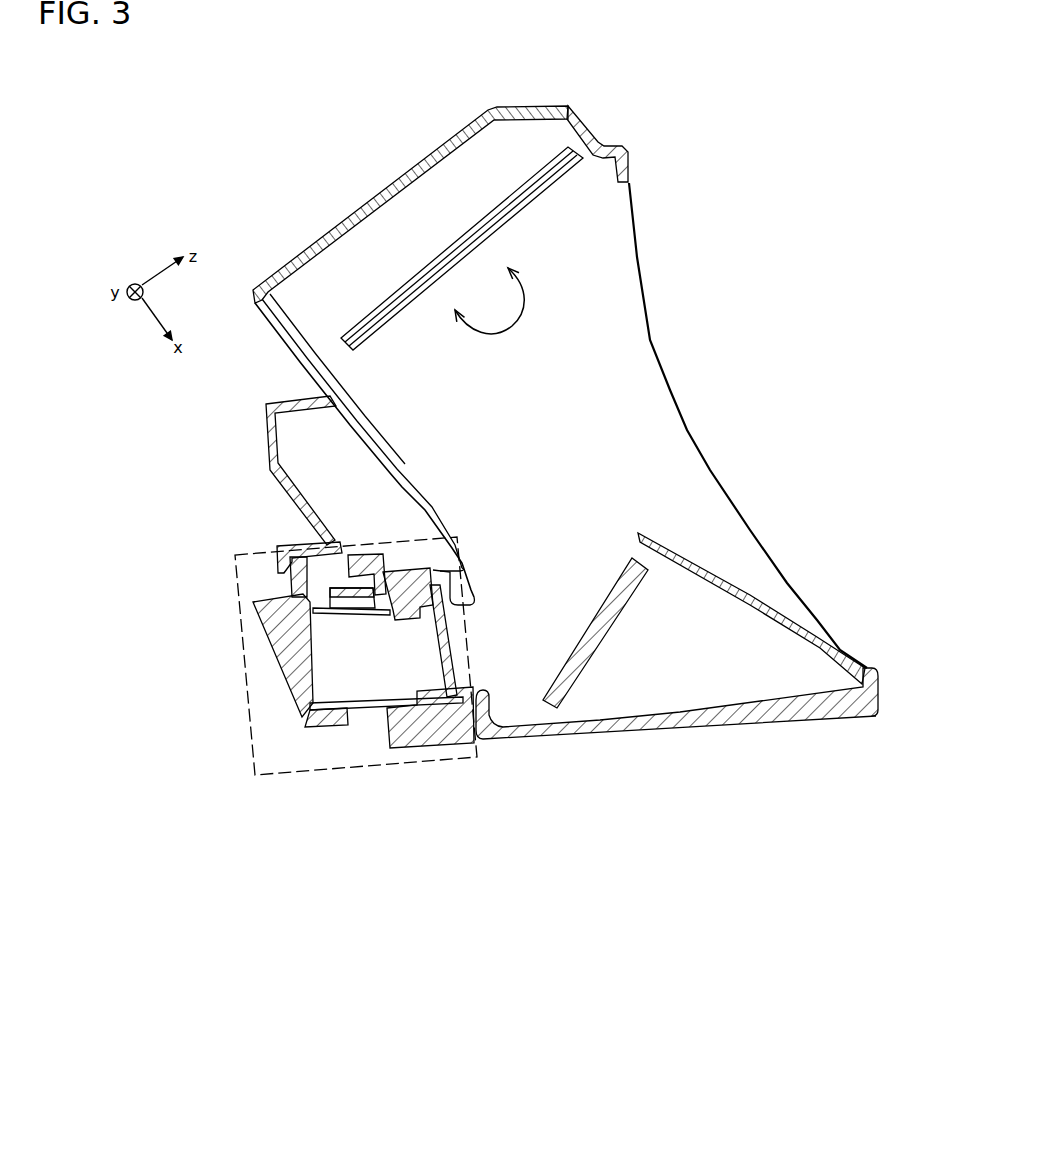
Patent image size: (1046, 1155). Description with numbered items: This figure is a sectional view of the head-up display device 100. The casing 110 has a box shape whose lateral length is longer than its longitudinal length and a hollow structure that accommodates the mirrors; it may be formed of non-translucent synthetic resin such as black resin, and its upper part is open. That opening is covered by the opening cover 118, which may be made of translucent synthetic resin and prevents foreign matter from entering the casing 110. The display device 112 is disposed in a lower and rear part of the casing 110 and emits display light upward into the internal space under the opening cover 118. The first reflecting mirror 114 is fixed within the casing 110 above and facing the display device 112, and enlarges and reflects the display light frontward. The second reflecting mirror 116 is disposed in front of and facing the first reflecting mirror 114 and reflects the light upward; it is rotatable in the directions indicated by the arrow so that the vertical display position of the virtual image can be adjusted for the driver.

The head-up display device 100 is at (552, 940).
The casing 110 is at (390, 184).
The display device 112 is at (363, 765).
The first reflecting mirror 114 is at (607, 633).
The second reflecting mirror 116 is at (507, 187).
The opening cover 118 is at (699, 440).